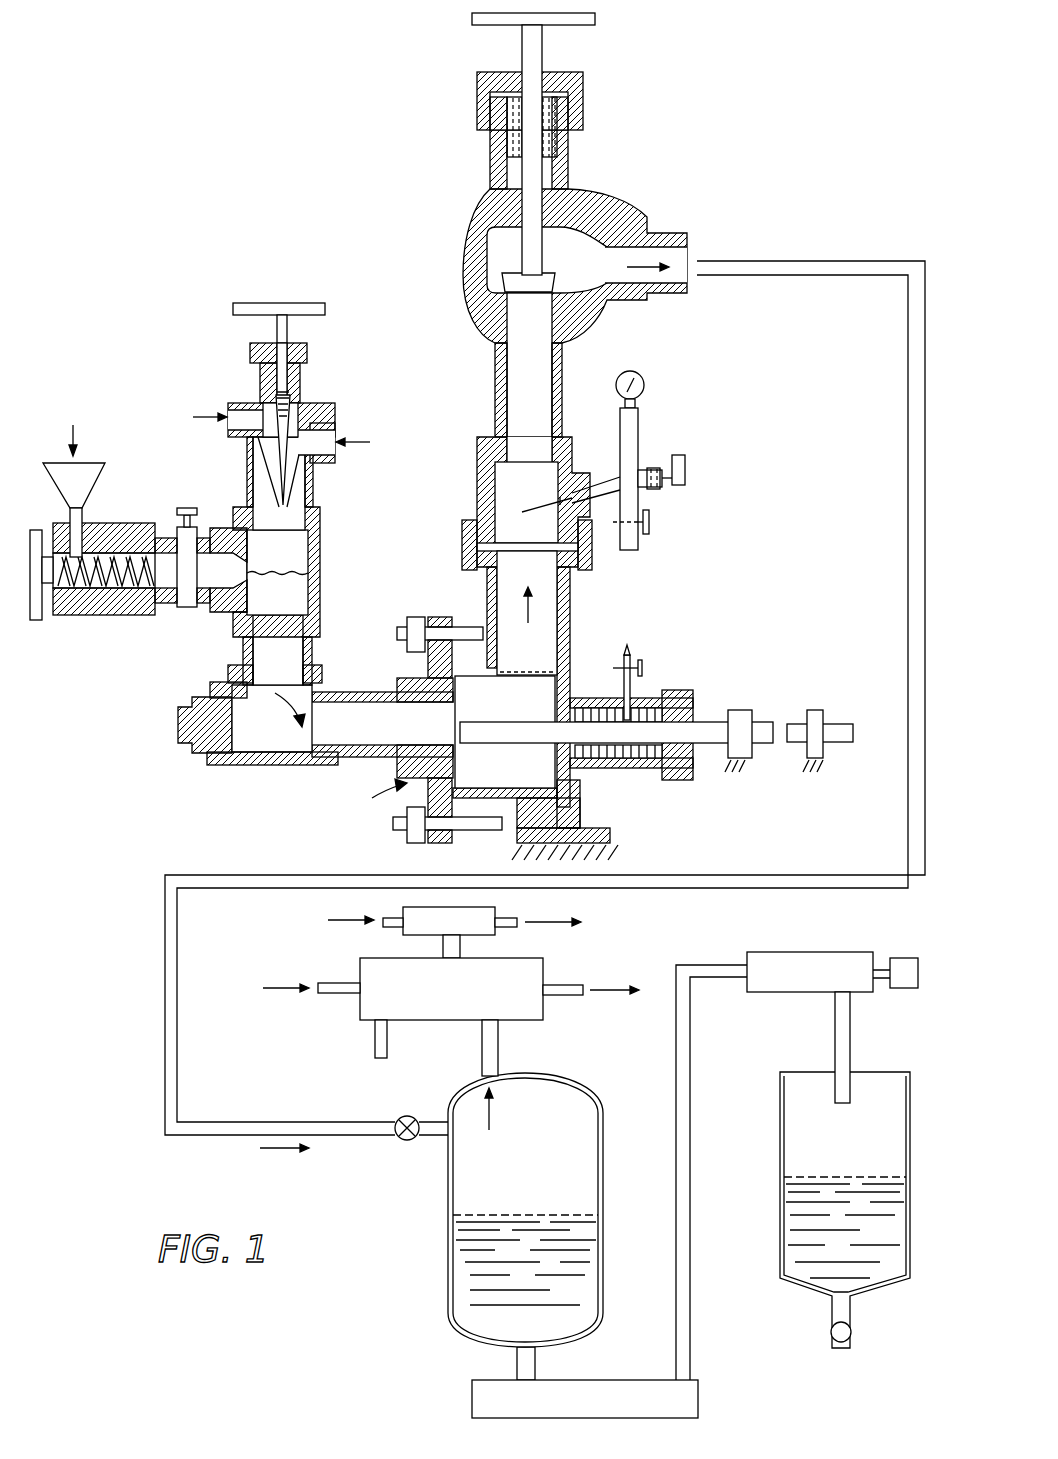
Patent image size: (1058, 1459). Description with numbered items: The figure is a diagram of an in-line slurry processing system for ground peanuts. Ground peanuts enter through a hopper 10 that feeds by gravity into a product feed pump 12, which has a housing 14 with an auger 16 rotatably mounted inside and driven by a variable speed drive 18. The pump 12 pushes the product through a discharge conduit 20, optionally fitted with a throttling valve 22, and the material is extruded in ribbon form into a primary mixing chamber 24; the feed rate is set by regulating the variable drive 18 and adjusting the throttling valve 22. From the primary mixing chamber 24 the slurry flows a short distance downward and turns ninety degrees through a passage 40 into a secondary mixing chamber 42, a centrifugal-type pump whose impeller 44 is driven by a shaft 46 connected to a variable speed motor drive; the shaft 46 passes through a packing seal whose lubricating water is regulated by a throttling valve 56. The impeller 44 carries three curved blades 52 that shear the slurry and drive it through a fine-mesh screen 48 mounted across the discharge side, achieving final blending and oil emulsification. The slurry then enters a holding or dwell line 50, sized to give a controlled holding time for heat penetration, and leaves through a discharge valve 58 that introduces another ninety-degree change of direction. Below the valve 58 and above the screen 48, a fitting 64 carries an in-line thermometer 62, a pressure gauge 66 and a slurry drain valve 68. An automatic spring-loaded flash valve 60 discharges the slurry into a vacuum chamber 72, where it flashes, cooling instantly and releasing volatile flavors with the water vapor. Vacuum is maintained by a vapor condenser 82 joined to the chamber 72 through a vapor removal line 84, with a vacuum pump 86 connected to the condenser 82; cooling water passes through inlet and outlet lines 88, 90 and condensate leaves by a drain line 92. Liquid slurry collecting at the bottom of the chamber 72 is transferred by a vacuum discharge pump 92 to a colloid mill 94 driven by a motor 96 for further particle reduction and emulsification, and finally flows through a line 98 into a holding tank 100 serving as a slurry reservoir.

The hopper 10 is at (97, 492).
The product feed pump 12 is at (105, 583).
The housing 14 is at (105, 622).
The auger 16 is at (90, 615).
The variable speed drive 18 is at (40, 622).
The discharge conduit 20 is at (167, 607).
The throttling valve 22 is at (188, 610).
The primary mixing chamber 24 is at (300, 560).
The passage 40 is at (362, 758).
The secondary mixing chamber 42 is at (378, 794).
The impeller 44 is at (450, 712).
The shaft 46 is at (830, 722).
The screen 48 is at (541, 671).
The dwell line 50 is at (578, 617).
The blades 52 is at (520, 708).
The throttling valve 56 is at (645, 668).
The discharge valve 58 is at (465, 273).
The flash valve 60 is at (407, 1142).
The in-line thermometer 62 is at (692, 482).
The fitting 64 is at (478, 495).
The pressure gauge 66 is at (645, 393).
The slurry drain valve 68 is at (652, 530).
The vacuum chamber 72 is at (596, 1099).
The vapor condenser 82 is at (460, 994).
The vapor removal line 84 is at (498, 1067).
The vacuum pump 86 is at (460, 931).
The inlet line 88 is at (345, 995).
The outlet line 90 is at (575, 996).
The drain line / vacuum discharge pump 92 is at (375, 1042).
The colloid mill 94 is at (845, 952).
The motor 96 is at (922, 958).
The line 98 is at (880, 1068).
The holding tank 100 is at (785, 1175).